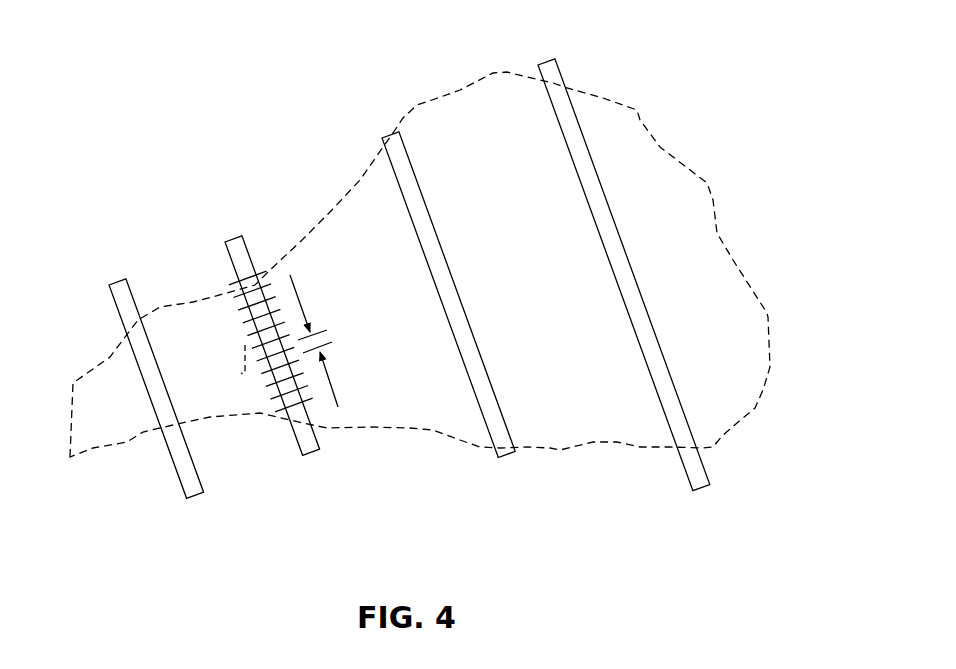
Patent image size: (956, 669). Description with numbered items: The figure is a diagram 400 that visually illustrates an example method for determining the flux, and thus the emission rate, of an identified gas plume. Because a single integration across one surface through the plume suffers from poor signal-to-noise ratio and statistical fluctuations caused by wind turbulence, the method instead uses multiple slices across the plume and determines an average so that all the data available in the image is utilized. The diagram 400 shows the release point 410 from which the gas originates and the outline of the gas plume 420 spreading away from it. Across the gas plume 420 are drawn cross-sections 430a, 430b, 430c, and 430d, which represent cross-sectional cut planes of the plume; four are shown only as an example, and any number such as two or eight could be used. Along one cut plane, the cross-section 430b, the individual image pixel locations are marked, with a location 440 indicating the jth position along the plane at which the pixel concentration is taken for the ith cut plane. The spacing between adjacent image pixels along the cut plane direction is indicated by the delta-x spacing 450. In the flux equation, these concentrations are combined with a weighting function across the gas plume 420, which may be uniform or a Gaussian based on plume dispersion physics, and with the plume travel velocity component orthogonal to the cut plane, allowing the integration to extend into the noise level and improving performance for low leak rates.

The diagram 400 is at (112, 177).
The release point 410 is at (113, 498).
The gas plume 420 is at (432, 102).
The cross-section 430a is at (191, 493).
The cross-section 430b is at (310, 448).
The cross-section 430c is at (503, 453).
The cross-section 430d is at (697, 487).
The location 440 is at (240, 338).
The Δx 450 is at (351, 312).